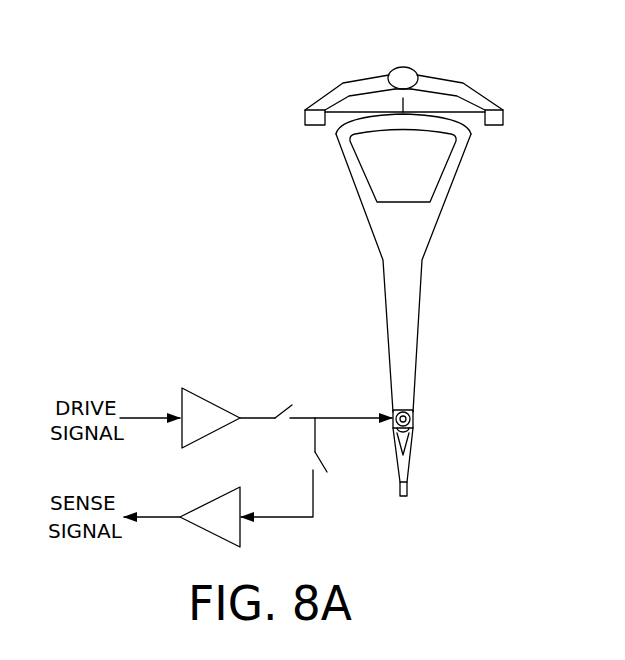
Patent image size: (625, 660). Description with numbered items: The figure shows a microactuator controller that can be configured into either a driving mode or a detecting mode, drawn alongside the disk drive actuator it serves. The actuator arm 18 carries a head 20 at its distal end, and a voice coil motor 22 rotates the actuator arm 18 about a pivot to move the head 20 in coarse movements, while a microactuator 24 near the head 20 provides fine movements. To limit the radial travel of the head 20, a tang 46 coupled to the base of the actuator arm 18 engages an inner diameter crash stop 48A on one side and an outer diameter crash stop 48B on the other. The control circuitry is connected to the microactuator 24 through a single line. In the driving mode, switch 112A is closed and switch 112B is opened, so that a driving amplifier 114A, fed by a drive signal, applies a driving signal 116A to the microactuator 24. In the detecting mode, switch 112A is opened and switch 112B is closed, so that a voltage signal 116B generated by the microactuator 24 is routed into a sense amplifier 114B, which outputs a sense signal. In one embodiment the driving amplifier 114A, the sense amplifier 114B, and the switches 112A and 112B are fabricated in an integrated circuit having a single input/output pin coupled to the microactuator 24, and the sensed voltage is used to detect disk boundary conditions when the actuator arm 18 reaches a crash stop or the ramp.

The actuator arm 18 is at (383, 293).
The head 20 is at (396, 486).
The voice coil motor 22 is at (337, 152).
The microactuator 24 is at (416, 413).
The tang 46 is at (403, 110).
The inner diameter crash stop 48A is at (318, 113).
The outer diameter crash stop 48B is at (489, 113).
The switch 112A is at (298, 410).
The switch 112B is at (323, 478).
The driving amplifier 114A is at (207, 390).
The sense amplifier 114B is at (203, 499).
The driving signal 116A is at (252, 416).
The voltage signal 116B is at (277, 514).